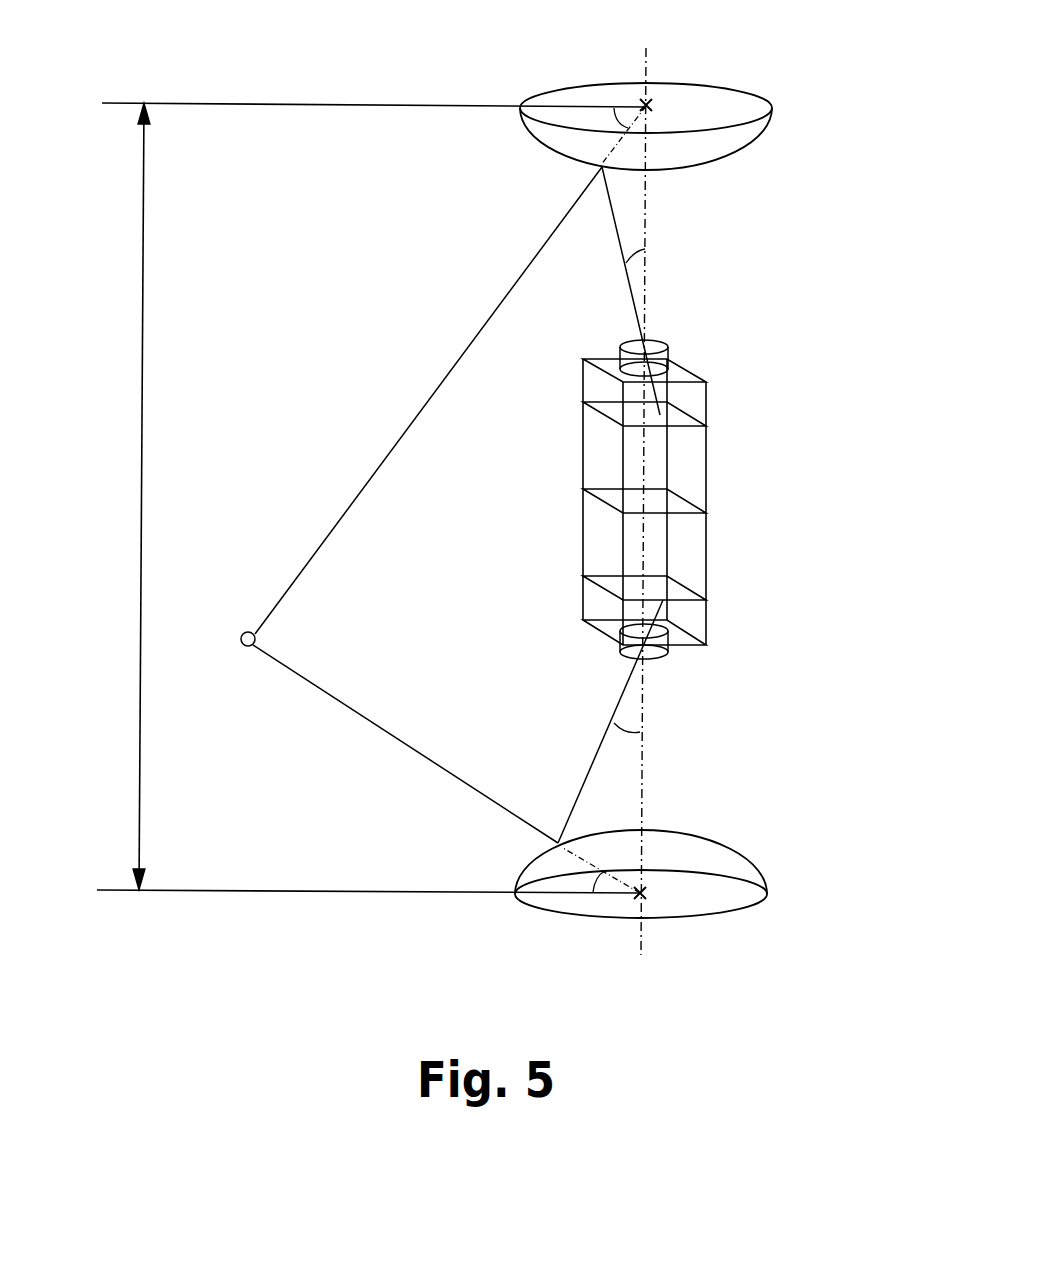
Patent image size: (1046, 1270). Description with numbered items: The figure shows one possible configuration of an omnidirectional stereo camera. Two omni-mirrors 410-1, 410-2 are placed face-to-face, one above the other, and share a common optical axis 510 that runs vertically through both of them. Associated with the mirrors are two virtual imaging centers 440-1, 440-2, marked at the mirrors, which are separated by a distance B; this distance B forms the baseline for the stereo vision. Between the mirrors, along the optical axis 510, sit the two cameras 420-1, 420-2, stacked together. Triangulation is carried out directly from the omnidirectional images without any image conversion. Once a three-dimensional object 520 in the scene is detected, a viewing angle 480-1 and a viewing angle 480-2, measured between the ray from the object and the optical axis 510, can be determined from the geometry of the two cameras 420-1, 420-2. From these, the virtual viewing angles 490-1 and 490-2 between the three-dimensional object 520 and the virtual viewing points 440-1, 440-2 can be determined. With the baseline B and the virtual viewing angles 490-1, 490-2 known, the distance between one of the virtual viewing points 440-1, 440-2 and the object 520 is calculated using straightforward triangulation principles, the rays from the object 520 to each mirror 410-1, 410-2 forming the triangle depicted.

The omni-mirror 410-1 is at (772, 110).
The omni-mirror 410-2 is at (767, 894).
The camera 420-1 is at (714, 447).
The camera 420-2 is at (714, 580).
The virtual imaging center 440-1 is at (647, 93).
The virtual imaging center 440-2 is at (642, 900).
The viewing angle 480-1 is at (638, 249).
The viewing angle 480-2 is at (630, 725).
The virtual viewing angle 490-1 is at (617, 118).
The virtual viewing angle 490-2 is at (591, 883).
The common optical axis 510 is at (645, 488).
The 3D object 520 is at (241, 638).
The distance B is at (140, 470).